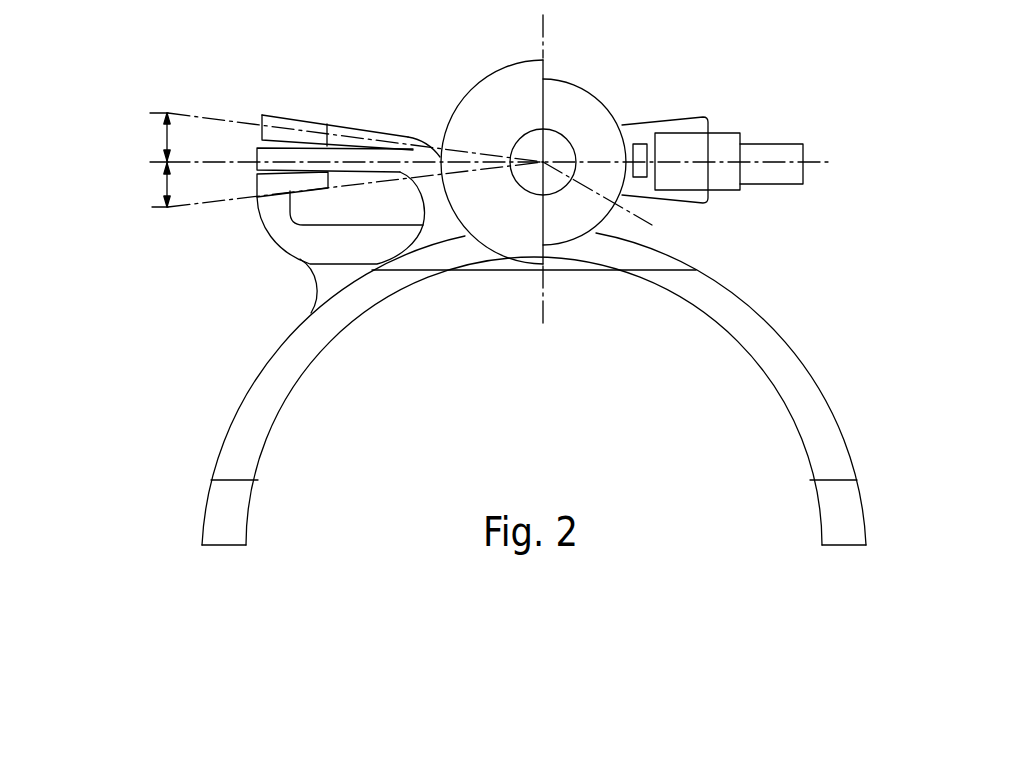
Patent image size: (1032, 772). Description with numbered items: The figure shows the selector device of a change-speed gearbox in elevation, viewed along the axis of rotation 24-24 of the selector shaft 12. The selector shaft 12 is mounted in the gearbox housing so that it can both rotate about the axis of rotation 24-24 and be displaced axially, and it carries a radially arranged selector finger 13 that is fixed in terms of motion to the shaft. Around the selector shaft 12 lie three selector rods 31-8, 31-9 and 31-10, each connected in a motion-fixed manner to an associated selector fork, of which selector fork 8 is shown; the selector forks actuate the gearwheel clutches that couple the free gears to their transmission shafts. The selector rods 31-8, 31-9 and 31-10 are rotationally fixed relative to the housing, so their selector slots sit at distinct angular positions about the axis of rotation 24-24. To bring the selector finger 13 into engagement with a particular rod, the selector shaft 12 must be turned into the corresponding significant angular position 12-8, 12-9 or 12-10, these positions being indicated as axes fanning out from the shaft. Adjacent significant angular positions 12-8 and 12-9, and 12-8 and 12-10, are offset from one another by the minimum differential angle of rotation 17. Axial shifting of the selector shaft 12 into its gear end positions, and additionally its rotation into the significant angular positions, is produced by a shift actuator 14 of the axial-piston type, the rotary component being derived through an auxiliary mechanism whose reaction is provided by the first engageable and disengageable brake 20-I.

The selector fork 8 is at (829, 405).
The selector shaft 12 is at (561, 122).
The significant angular position 12-8 is at (464, 162).
The significant angular position 12-9 is at (319, 126).
The significant angular position 12-10 is at (315, 199).
The selector finger 13 is at (432, 149).
The shift actuator 14 is at (484, 247).
The minimum differential angle of rotation 17 is at (167, 136).
The first engageable and disengageable brake 20-I is at (749, 128).
The axis of rotation 24-24 is at (629, 202).
The selector rod 31-8 is at (262, 144).
The selector rod 31-9 is at (380, 132).
The selector rod 31-10 is at (276, 253).